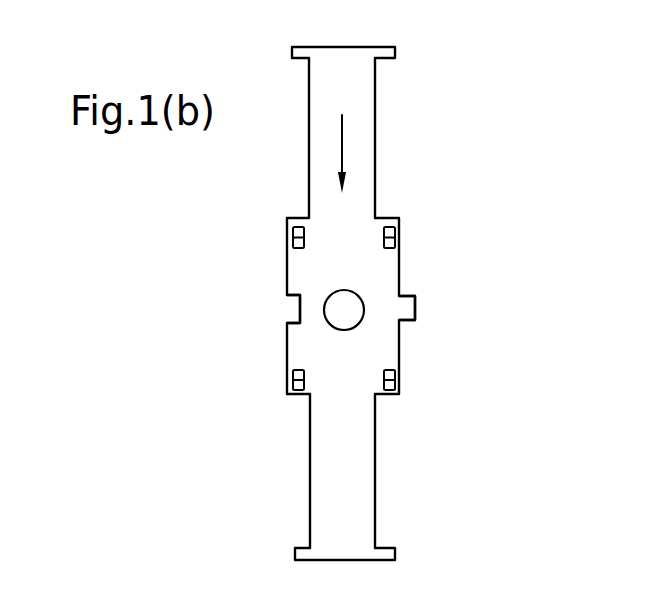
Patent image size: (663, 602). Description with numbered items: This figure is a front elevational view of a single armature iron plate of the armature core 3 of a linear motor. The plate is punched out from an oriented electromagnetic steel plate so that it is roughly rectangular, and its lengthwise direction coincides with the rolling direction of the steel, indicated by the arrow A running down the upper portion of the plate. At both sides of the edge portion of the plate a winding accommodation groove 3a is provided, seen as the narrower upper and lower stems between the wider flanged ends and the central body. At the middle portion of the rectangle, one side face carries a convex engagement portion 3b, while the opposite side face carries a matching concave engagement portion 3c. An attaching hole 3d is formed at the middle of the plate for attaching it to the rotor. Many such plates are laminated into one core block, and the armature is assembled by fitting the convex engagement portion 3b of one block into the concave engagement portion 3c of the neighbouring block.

The armature core 3 is at (360, 443).
The winding accommodation groove 3a is at (372, 113).
The convex engagement portion 3b is at (406, 302).
The concave engagement portion 3c is at (292, 311).
The attaching hole 3d is at (348, 322).